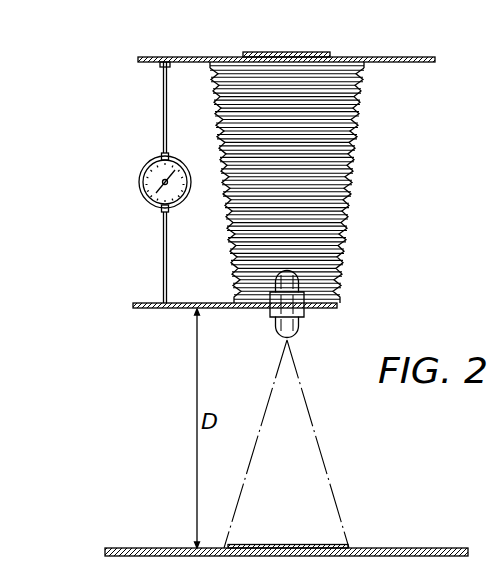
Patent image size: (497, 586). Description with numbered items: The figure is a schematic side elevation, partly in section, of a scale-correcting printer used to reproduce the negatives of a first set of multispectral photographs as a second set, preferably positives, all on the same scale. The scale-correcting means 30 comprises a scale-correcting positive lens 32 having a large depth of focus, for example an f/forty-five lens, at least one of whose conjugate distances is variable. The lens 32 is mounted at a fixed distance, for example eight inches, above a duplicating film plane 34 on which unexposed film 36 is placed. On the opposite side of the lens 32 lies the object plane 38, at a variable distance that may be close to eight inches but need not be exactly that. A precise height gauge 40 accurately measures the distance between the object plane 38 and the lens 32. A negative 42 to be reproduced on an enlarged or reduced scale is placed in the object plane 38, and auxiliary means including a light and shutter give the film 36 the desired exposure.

The scale-correcting means 30 is at (113, 328).
The scale-correcting positive lens 32 is at (304, 322).
The duplicating film plane 34 is at (137, 548).
The unexposed film 36 is at (290, 544).
The object plane 38 is at (405, 57).
The height gauge 40 is at (139, 176).
The negative 42 is at (277, 52).